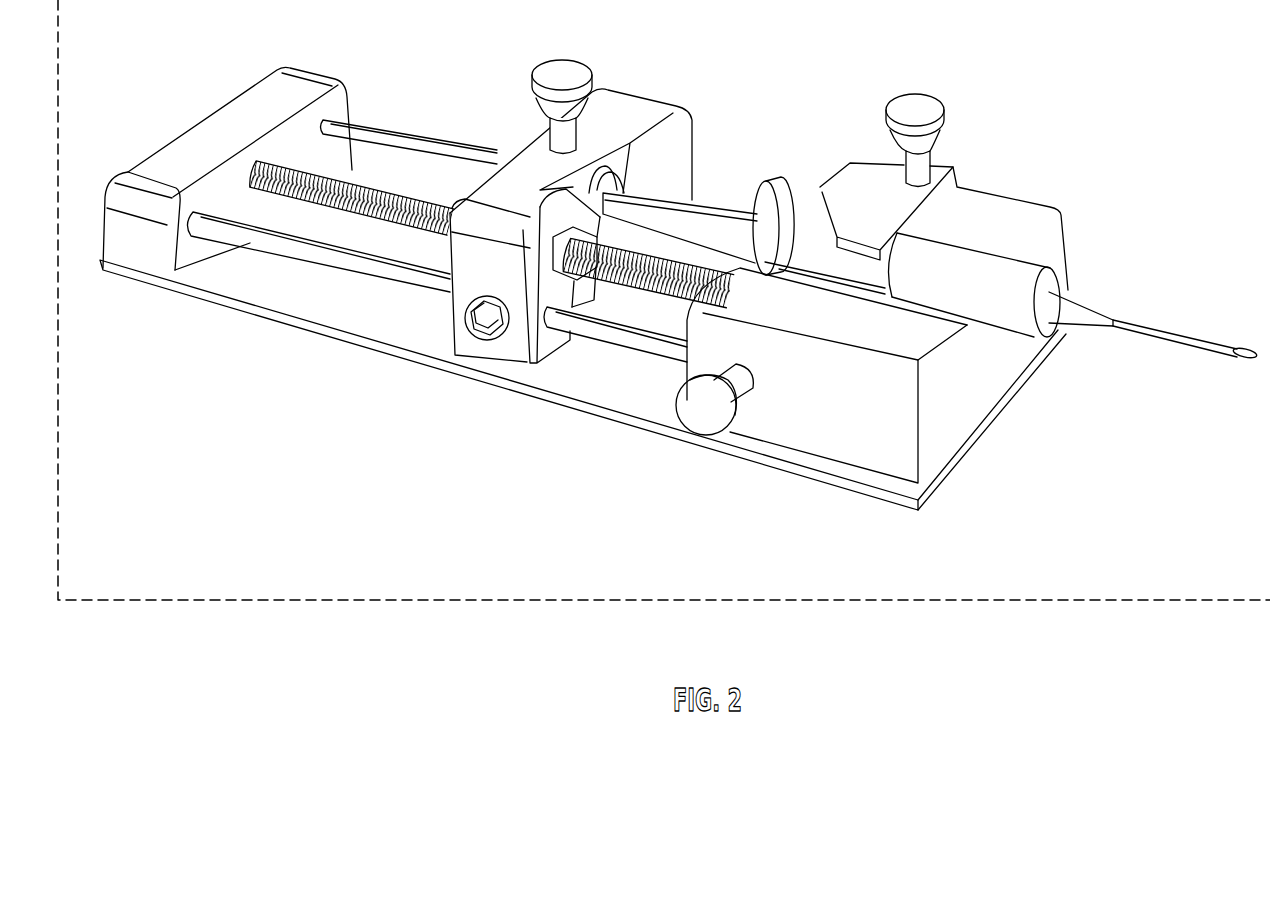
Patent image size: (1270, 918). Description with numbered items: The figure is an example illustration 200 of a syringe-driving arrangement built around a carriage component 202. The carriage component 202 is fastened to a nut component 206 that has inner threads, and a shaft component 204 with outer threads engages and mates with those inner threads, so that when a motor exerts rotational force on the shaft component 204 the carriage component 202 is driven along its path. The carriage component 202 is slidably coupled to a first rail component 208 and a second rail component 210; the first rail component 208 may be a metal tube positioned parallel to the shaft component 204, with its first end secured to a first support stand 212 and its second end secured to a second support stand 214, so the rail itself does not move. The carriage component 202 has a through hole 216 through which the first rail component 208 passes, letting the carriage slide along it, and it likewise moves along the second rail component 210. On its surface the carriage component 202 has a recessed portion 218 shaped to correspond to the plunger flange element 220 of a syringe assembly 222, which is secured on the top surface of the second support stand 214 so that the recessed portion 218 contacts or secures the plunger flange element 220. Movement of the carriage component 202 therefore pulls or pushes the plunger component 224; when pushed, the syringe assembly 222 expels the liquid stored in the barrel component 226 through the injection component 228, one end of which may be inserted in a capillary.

The example illustration 200 is at (887, 606).
The carriage component 202 is at (508, 150).
The shaft component 204 is at (373, 214).
The nut component 206 is at (573, 287).
The first rail component 208 is at (345, 283).
The second rail component 210 is at (412, 135).
The first support stand 212 is at (171, 134).
The second support stand 214 is at (978, 396).
The through hole 216 is at (542, 323).
The recessed portion 218 is at (621, 140).
The plunger flange element 220 is at (615, 169).
The syringe assembly 222 is at (945, 240).
The plunger component 224 is at (714, 193).
The barrel component 226 is at (1054, 261).
The injection component 228 is at (1175, 329).